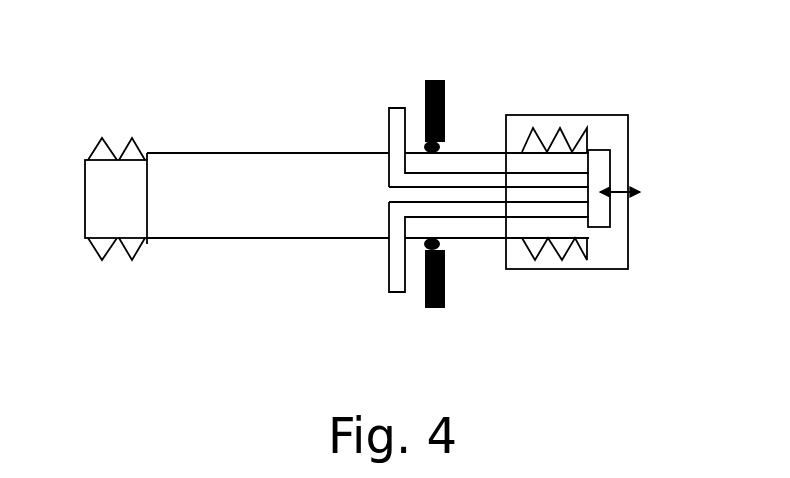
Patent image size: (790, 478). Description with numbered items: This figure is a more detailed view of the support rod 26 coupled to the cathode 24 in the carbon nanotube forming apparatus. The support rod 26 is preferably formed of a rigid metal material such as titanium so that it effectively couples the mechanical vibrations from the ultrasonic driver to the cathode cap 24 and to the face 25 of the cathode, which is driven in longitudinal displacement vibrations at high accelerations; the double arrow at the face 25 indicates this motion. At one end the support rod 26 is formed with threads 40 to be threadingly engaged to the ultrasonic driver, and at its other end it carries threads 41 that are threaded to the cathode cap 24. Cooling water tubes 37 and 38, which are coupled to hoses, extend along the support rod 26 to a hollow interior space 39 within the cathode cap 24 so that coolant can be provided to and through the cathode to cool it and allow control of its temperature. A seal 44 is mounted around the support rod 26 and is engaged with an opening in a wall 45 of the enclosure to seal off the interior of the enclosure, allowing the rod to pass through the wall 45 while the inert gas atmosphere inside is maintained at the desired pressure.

The cathode 24 is at (611, 140).
The face of the cathode 25 is at (625, 250).
The support rod 26 is at (237, 160).
The cooling water tube 37 is at (392, 142).
The cooling water tube 38 is at (388, 250).
The hollow interior space 39 is at (597, 212).
The threads 40 is at (103, 137).
The threads 41 is at (535, 143).
The seal 44 is at (440, 147).
The wall 45 is at (430, 80).